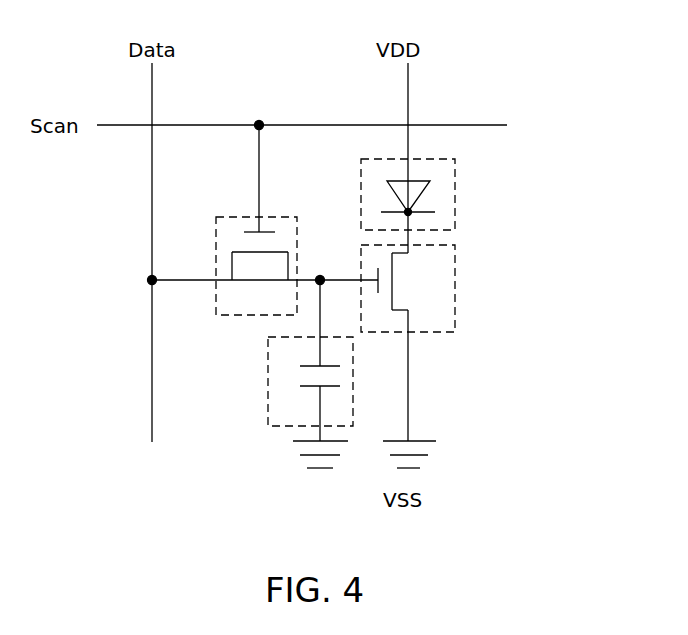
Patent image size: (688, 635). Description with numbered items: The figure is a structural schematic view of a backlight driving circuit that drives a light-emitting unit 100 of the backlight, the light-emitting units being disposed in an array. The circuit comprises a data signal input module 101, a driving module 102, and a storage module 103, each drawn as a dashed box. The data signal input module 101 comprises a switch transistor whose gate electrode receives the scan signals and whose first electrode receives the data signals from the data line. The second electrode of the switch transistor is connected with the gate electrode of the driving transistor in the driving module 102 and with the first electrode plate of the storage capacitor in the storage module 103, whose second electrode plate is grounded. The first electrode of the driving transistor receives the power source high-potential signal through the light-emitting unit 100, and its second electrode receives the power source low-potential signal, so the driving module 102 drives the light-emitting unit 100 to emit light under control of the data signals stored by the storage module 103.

The light-emitting unit 100 is at (457, 203).
The data signal input module 101 is at (216, 240).
The driving module 102 is at (457, 295).
The storage module 103 is at (268, 372).